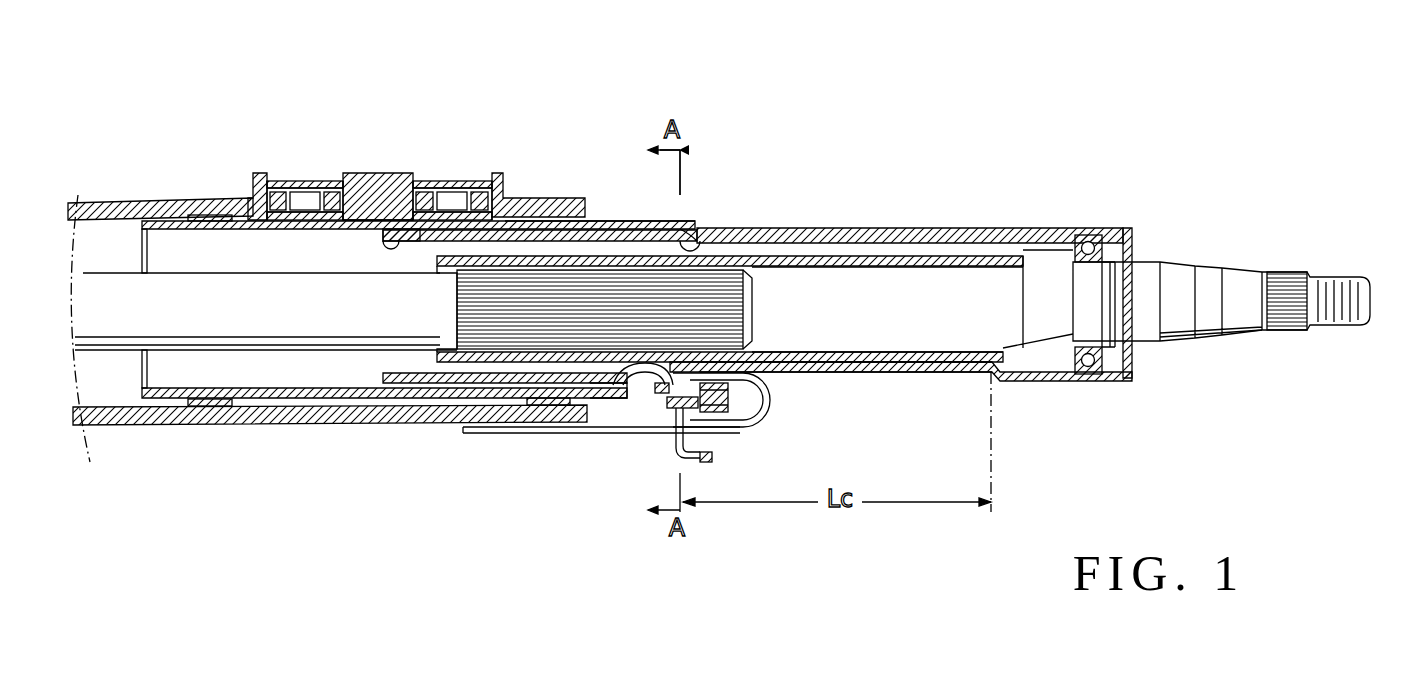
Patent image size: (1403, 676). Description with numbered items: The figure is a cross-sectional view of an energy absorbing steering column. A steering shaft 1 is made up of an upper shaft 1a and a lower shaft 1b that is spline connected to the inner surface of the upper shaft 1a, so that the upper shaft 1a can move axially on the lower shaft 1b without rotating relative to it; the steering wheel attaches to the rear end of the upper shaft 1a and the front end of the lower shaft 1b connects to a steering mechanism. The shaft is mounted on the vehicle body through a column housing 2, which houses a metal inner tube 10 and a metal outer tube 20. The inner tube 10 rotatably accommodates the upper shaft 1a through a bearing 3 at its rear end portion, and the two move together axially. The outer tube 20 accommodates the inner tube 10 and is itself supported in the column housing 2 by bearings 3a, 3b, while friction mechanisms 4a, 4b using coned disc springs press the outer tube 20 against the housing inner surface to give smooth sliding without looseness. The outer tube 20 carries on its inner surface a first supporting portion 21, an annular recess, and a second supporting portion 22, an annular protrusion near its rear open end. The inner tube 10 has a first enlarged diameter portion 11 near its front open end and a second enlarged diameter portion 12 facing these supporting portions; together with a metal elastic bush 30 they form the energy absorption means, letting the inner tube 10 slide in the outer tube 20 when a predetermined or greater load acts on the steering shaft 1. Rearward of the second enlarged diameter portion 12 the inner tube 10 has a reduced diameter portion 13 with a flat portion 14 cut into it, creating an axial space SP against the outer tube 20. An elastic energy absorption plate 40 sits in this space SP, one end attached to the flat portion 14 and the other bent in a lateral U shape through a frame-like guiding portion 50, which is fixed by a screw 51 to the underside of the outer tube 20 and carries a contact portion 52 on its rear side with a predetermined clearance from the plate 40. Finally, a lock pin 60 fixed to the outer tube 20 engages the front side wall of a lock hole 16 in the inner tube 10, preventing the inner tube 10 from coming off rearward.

The steering shaft 1 is at (1226, 262).
The upper shaft 1a is at (1040, 322).
The lower shaft 1b is at (125, 322).
The column housing 2 is at (120, 203).
The bearing 3 is at (1088, 240).
The bearing 3a is at (562, 221).
The bearing 3b is at (207, 221).
The friction mechanism 4a is at (467, 181).
The friction mechanism 4b is at (280, 185).
The inner tube 10 is at (986, 228).
The first enlarged diameter portion 11 is at (352, 221).
The second enlarged diameter portion 12 is at (717, 242).
The reduced diameter portion 13 is at (865, 372).
The flat portion 14 is at (923, 372).
The lock hole 16 is at (600, 395).
The outer tube 20 is at (634, 220).
The first supporting portion 21 is at (400, 235).
The second supporting portion 22 is at (688, 228).
The elastic bush 30 is at (377, 229).
The energy absorption plate 40 is at (771, 404).
The guiding portion 50 is at (708, 462).
The screw 51 is at (678, 412).
The contact portion 52 is at (715, 412).
The lock pin 60 is at (640, 385).
The axial space SP is at (662, 393).